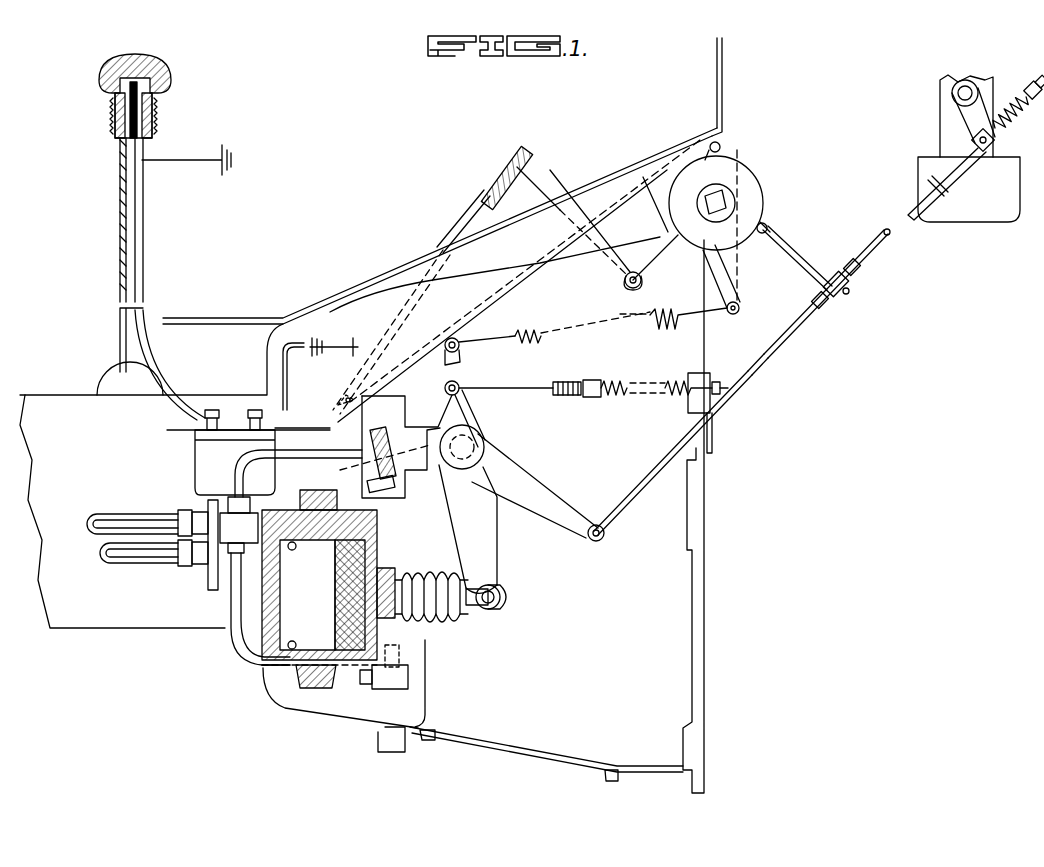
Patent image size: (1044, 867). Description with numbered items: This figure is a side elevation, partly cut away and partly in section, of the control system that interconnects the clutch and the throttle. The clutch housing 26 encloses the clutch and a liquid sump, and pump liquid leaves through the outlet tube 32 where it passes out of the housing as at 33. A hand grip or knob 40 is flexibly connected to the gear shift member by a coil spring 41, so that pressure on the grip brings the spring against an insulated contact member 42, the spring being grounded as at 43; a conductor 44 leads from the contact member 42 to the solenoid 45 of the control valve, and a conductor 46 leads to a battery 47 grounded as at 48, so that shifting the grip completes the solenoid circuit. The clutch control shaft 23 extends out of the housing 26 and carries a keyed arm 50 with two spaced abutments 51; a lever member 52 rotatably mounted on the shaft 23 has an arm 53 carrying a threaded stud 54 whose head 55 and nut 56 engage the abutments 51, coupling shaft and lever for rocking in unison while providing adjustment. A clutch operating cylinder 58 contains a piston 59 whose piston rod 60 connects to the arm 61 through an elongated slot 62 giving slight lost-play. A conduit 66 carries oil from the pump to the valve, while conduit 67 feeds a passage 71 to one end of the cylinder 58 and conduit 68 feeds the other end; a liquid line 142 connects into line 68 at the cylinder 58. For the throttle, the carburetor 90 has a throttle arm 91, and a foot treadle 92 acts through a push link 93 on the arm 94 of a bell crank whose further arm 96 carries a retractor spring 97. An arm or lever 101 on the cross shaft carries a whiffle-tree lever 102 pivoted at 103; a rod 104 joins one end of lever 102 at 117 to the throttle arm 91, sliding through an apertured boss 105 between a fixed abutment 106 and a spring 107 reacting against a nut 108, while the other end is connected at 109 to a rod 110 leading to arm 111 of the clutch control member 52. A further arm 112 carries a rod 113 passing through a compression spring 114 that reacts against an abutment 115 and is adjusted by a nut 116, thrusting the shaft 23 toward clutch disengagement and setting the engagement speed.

The clutch control shaft 23 is at (485, 448).
The clutch housing 26 is at (680, 635).
The outlet tube 32 is at (425, 650).
The housing side outlet 33 is at (410, 682).
The hand grip or knob 40 is at (172, 78).
The coil spring 41 is at (155, 118).
The insulated contact member 42 is at (143, 56).
The ground connection 43 is at (198, 162).
The conductor 44 is at (143, 250).
The solenoid 45 is at (195, 460).
The conductor 46 is at (282, 356).
The battery 47 is at (313, 363).
The ground connection 48 is at (332, 342).
The arm 50 is at (428, 478).
The spaced abutments 51 is at (448, 350).
The lever member 52 is at (520, 475).
The arm 53 is at (395, 455).
The threaded stud 54 is at (370, 462).
The head 55 is at (410, 412).
The nut 56 is at (372, 484).
The clutch operating cylinder 58 is at (257, 660).
The piston 59 is at (338, 628).
The piston rod 60 is at (508, 592).
The arm 61 is at (490, 548).
The elongated slot 62 is at (505, 608).
The conduit 66 is at (230, 650).
The conduit 67 is at (128, 516).
The conduit 68 is at (130, 556).
The passage 71 is at (308, 520).
The carburetor 90 is at (945, 220).
The throttle arm 91 is at (975, 85).
The foot treadle 92 is at (466, 218).
The push link 93 is at (545, 185).
The arm 94 is at (643, 278).
The arm 96 is at (741, 308).
The retractor spring 97 is at (645, 335).
The arm or lever 101 is at (795, 252).
The lever 102 is at (848, 297).
The pivotal mounting 103 is at (824, 312).
The rod 104 is at (860, 262).
The apertured boss 105 is at (975, 140).
The fixed abutment 106 is at (925, 175).
The spring 107 is at (1000, 125).
The nut 108 is at (1025, 92).
The connection 109 is at (860, 275).
The rod 110 is at (742, 395).
The arm 111 is at (565, 512).
The arm 112 is at (470, 418).
The rod 113 is at (518, 385).
The compression spring 114 is at (608, 398).
The abutment 115 is at (700, 372).
The nut 116 is at (580, 380).
The connection 117 is at (768, 362).
The liquid line 142 is at (302, 462).